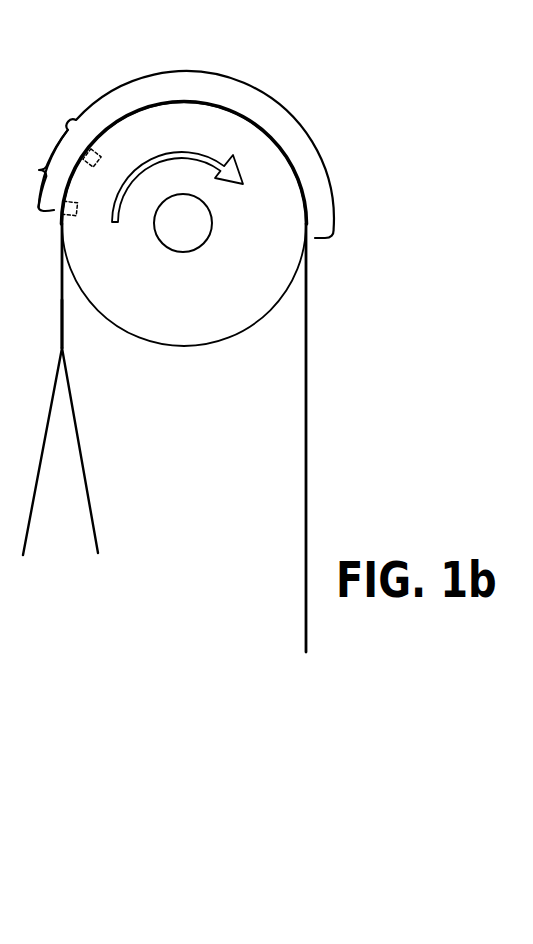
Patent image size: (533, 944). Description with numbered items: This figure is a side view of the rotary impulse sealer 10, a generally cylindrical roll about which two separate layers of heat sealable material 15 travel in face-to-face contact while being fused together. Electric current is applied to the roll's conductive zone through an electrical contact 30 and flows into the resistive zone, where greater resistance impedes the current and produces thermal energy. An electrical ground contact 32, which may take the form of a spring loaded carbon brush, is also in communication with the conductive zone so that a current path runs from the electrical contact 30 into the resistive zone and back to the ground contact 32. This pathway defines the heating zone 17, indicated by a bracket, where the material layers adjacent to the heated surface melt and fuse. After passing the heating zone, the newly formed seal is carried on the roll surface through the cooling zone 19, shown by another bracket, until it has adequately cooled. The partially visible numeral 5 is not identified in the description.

The rotary impulse sealer 10 is at (388, 86).
The heat sealable material 15 is at (335, 360).
The cooling zone 19 is at (247, 76).
The heating zone 17 is at (41, 168).
The electrical contact 30 is at (92, 140).
The electrical ground contact 32 is at (33, 224).
The roller 5 is at (31, 224).